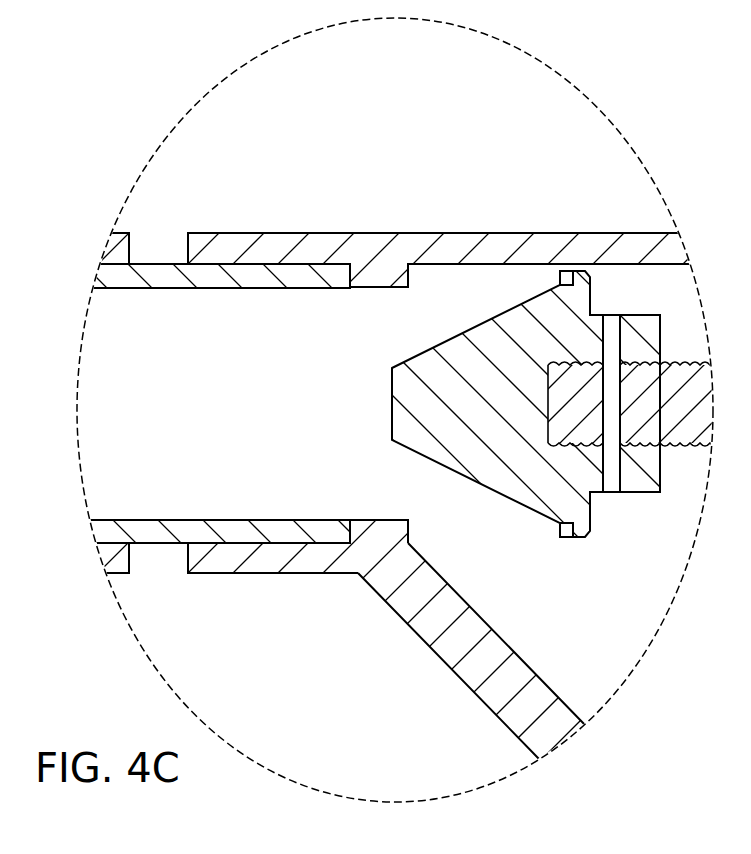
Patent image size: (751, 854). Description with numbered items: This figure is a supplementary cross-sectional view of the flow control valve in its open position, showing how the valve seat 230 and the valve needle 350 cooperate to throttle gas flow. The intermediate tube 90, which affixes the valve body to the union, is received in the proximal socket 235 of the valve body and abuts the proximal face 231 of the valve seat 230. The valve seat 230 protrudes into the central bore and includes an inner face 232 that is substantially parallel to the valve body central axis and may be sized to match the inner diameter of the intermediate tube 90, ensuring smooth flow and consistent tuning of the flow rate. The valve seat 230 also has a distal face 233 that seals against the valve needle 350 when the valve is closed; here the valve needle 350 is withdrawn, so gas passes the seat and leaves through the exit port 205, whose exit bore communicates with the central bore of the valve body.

The intermediate tube 90 is at (160, 268).
The valve seat 230 is at (385, 272).
The proximal face 231 is at (328, 289).
The inner face 232 is at (383, 283).
The distal face 233 is at (409, 276).
The proximal socket 235 is at (303, 546).
The exit port 205 is at (505, 712).
The valve needle 350 is at (487, 373).